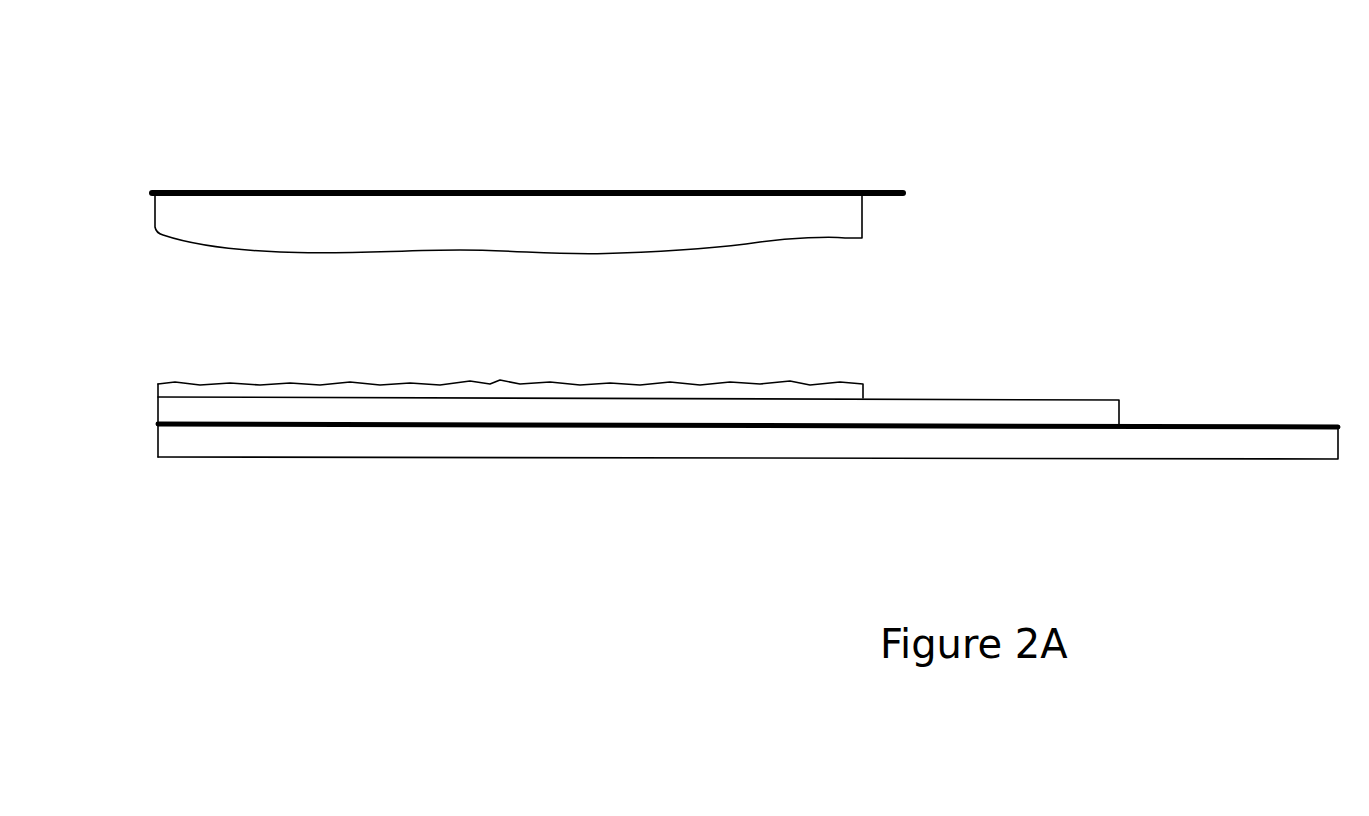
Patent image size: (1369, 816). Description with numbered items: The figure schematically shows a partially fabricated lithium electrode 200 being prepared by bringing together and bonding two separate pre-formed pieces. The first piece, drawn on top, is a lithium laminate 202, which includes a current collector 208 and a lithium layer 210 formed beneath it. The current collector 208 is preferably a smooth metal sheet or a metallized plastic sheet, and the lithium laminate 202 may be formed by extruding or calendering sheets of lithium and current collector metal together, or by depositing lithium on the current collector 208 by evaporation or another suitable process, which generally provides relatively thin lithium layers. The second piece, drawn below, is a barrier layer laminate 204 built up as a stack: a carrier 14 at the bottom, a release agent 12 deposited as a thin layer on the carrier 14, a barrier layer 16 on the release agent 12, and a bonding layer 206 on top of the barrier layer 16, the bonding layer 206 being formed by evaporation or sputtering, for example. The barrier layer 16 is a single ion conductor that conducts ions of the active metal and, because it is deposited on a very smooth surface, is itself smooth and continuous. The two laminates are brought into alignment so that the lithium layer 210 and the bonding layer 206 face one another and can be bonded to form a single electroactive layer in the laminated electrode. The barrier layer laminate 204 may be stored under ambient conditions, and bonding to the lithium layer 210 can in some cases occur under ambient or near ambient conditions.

The partially fabricated lithium electrode 200 is at (953, 123).
The lithium laminate 202 is at (148, 201).
The barrier layer laminate 204 is at (140, 405).
The bonding layer 206 is at (862, 396).
The current collector 208 is at (896, 195).
The lithium layer 210 is at (848, 236).
The release agent 12 is at (1175, 425).
The carrier 14 is at (1118, 448).
The barrier layer 16 is at (1078, 398).